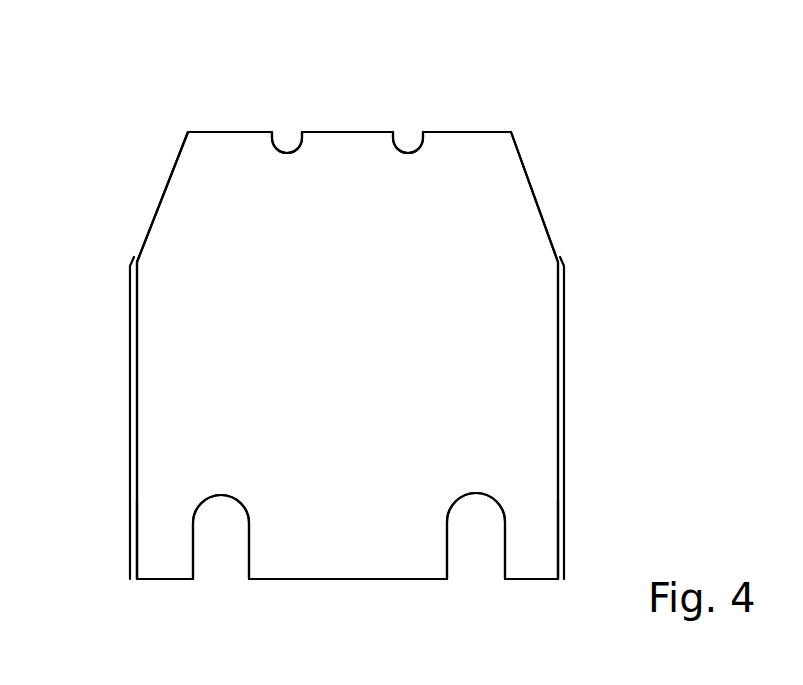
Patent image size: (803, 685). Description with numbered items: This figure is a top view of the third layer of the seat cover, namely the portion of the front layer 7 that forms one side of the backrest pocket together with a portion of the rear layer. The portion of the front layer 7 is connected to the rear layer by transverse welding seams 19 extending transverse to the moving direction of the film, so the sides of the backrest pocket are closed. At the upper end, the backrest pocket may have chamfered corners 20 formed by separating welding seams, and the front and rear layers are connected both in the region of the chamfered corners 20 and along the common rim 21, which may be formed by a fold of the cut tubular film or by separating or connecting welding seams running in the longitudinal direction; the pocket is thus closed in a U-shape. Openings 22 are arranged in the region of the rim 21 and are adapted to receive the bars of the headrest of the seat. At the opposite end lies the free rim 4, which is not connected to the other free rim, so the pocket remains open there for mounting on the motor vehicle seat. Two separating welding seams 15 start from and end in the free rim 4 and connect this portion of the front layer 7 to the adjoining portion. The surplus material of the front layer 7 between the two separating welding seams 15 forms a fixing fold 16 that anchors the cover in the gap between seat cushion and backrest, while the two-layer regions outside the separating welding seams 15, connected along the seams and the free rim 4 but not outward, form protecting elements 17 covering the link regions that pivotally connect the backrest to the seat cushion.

The free rim 4 is at (165, 582).
The front layer 7 is at (348, 205).
The separating welding seams 15 is at (193, 557).
The fixing fold 16 is at (362, 540).
The protecting elements 17 is at (160, 537).
The transverse welding seams 19 is at (138, 338).
The chamfered corners 20 is at (163, 190).
The common rim 21 is at (220, 132).
The openings 22 is at (290, 148).